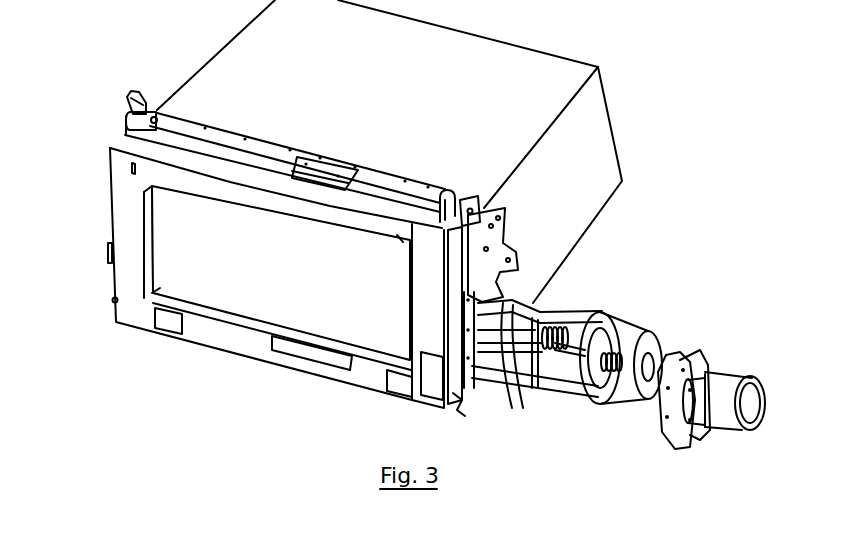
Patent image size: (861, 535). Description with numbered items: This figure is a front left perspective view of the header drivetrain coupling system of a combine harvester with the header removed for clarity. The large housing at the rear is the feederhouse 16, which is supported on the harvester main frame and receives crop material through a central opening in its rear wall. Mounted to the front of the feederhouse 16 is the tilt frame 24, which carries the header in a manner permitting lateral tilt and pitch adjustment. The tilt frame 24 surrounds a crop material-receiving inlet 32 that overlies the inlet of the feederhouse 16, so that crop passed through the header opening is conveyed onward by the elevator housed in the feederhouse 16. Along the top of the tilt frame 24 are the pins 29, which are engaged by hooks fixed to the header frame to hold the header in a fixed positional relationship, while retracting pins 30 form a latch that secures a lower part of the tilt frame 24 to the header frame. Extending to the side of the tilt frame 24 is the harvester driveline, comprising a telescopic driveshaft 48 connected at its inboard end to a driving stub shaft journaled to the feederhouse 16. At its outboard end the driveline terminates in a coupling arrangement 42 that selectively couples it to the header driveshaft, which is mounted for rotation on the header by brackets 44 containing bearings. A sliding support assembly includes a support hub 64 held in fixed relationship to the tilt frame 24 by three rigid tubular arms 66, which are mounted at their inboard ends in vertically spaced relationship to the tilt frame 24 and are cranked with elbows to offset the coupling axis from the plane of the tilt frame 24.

The feederhouse 16 is at (604, 142).
The tilt frame 24 is at (125, 213).
The pins 29 is at (157, 110).
The retracting pins 30 is at (466, 426).
The crop material-receiving inlet 32 is at (251, 302).
The coupling arrangement 42 is at (688, 338).
The brackets 44 is at (678, 442).
The telescopic driveshaft 48 is at (584, 332).
The support hub 64 is at (613, 326).
The tubular arms 66 is at (515, 367).